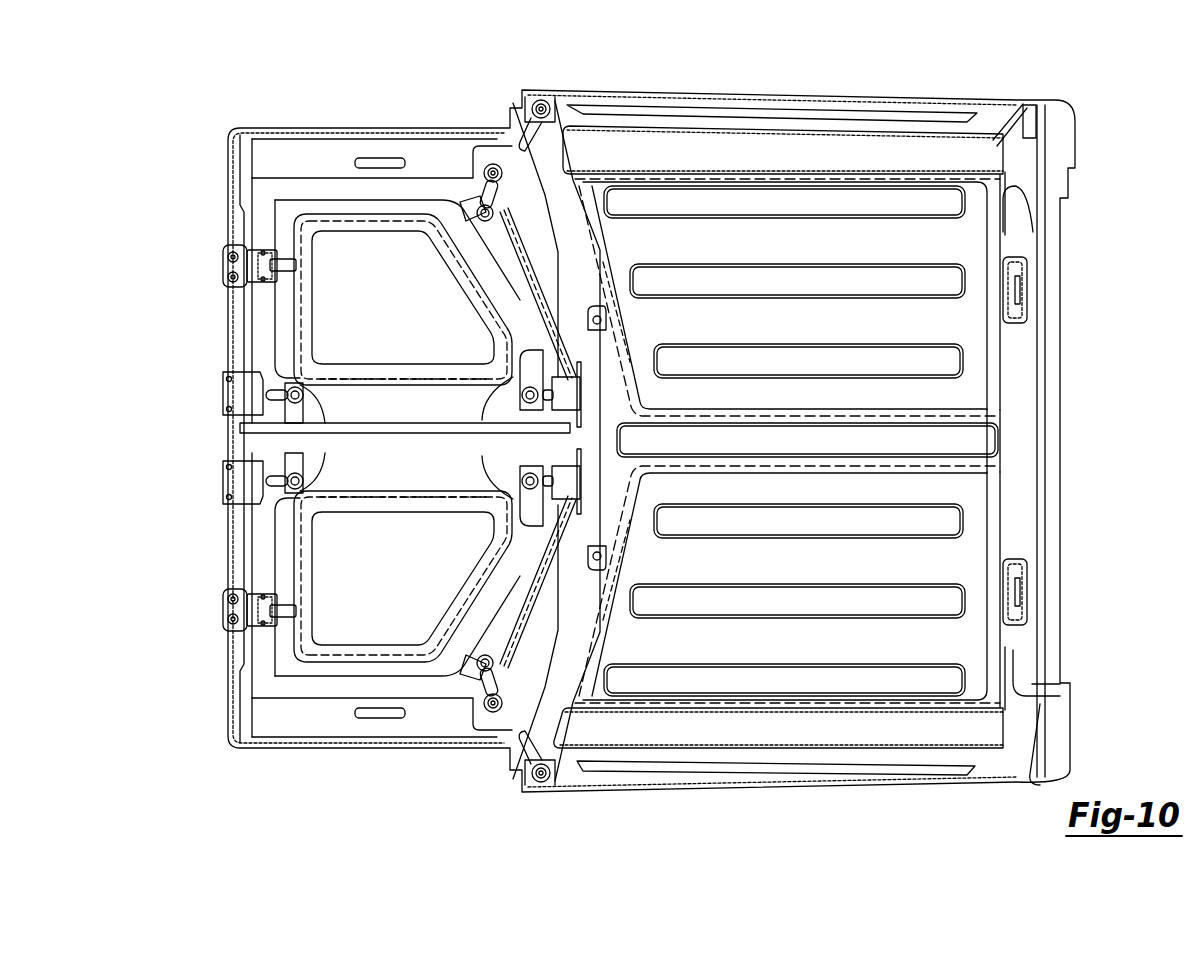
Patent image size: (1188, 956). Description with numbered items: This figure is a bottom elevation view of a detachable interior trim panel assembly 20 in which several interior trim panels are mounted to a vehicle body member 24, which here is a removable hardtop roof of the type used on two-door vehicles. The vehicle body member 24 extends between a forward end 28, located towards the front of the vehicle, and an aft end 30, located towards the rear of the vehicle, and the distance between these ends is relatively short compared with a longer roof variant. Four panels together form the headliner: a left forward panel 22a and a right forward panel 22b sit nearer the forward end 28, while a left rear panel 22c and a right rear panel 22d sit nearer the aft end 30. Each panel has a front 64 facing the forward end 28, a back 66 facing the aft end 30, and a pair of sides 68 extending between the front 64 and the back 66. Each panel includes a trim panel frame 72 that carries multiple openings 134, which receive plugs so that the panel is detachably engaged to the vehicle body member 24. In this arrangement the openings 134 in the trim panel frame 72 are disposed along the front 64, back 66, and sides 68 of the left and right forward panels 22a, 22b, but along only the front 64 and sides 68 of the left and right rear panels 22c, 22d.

The detachable interior trim panel assembly 20 is at (152, 118).
The vehicle body member 24 is at (393, 126).
The forward end 28 is at (225, 195).
The aft end 30 is at (1066, 240).
The left forward panel 22a is at (411, 305).
The right forward panel 22b is at (410, 581).
The left rear panel 22c is at (836, 248).
The right rear panel 22d is at (835, 572).
The front 64 is at (285, 316).
The back 66 is at (498, 300).
The sides 68 is at (345, 214).
The trim panel frame 72 is at (300, 358).
The openings 134 is at (464, 374).